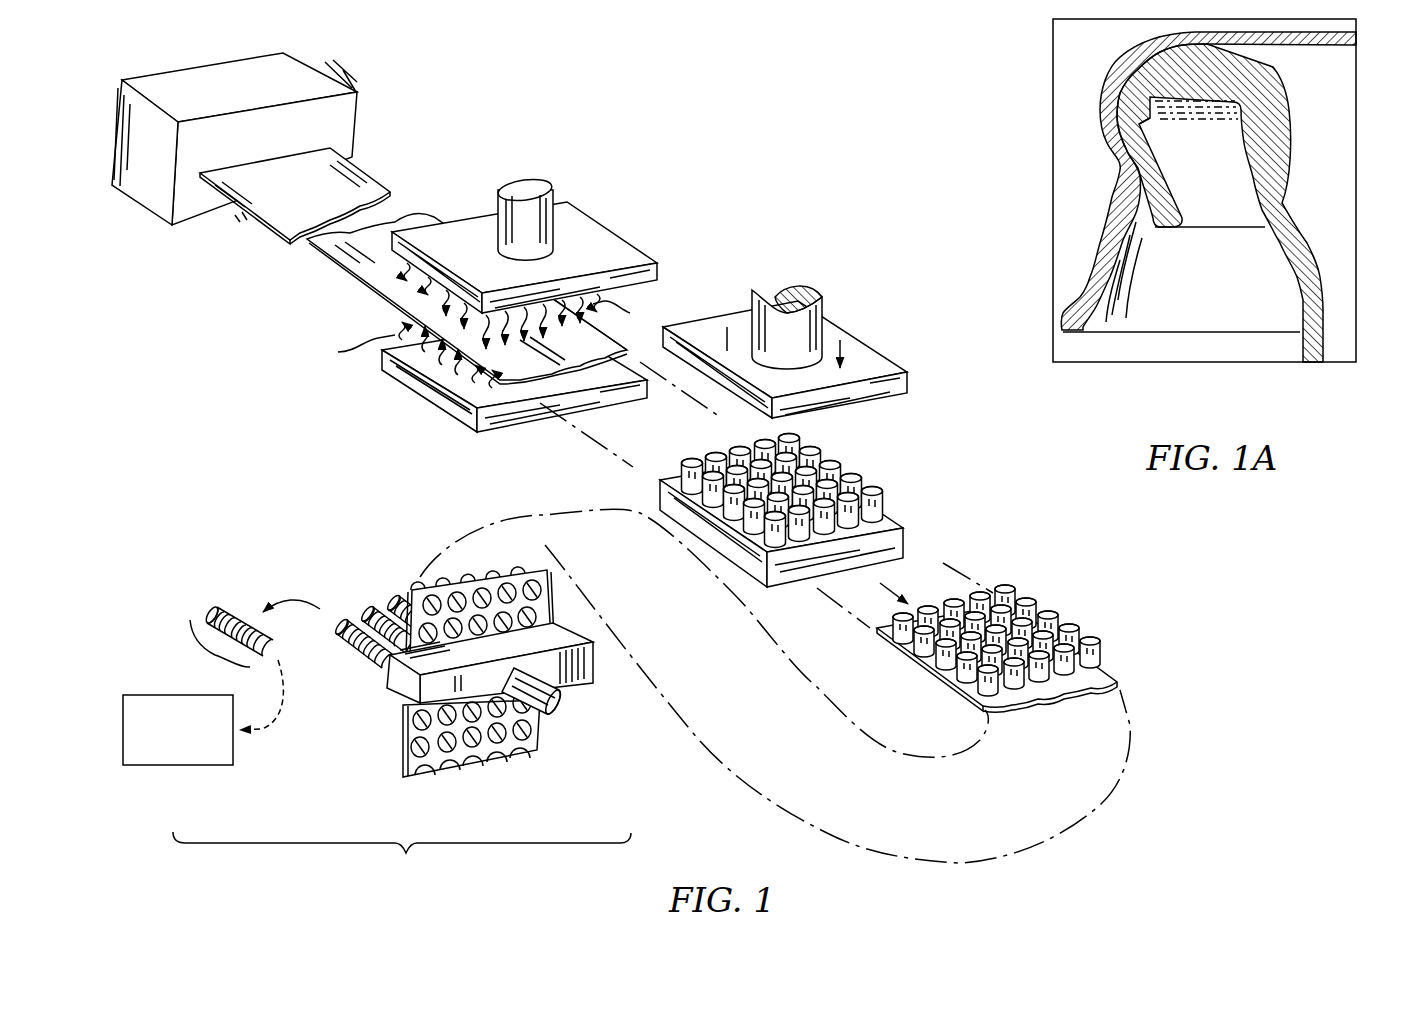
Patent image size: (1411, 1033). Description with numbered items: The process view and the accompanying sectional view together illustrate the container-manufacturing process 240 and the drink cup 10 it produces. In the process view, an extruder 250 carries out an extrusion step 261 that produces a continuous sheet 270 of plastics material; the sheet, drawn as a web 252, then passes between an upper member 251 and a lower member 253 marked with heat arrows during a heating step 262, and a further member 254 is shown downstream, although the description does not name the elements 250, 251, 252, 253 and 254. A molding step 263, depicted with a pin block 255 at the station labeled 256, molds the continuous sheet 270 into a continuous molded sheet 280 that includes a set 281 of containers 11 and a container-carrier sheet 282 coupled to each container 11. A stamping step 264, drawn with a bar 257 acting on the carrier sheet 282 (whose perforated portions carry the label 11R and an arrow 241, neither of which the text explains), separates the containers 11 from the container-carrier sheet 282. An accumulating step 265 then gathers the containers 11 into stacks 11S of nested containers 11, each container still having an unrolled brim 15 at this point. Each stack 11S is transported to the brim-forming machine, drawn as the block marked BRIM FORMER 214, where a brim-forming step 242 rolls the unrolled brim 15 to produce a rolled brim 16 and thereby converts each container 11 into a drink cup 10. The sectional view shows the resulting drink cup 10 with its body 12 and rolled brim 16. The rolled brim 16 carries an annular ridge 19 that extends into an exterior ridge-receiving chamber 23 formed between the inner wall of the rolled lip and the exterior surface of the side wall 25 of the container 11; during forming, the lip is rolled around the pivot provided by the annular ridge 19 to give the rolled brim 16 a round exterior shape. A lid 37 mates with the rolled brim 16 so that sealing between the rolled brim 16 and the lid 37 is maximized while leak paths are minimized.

In FIG. 1, the extruder 250 is at (236, 85).
In FIG. 1, the extrusion step 261 is at (383, 133).
In FIG. 1, the container-manufacturing process 240 is at (643, 155).
In FIG. 1, the upper press platen 251 is at (601, 240).
In FIG. 1, the heating step 262 is at (680, 253).
In FIG. 1, the extruded web 252 is at (397, 280).
In FIG. 1, the press platen with punch 254 is at (862, 357).
In FIG. 1, the continuous sheet 270 is at (283, 218).
In FIG. 1, the lower press platen 253 is at (508, 430).
In FIG. 1, the molding step 263 is at (917, 465).
In FIG. 1, the pin block 255 is at (887, 497).
In FIG. 1, the forming step 256 is at (913, 545).
In FIG. 1, the unrolled brim 15 is at (230, 612).
In FIG. 1, the accumulating step 265 is at (362, 600).
In FIG. 1, the container 11 is at (340, 630).
In FIG. 1, the container-carrier sheet 282 is at (497, 588).
In FIG. 1, the pin rim 11R is at (545, 588).
In FIG. 1, the cutting bar 257 is at (572, 637).
In FIG. 1, the stack of nested containers 11S is at (360, 672).
In FIG. 1, the stamping step 264 is at (580, 695).
In FIG. 1, the separating step 241 is at (637, 762).
In FIG. 1, the brim former 214 is at (123, 730).
In FIG. 1, the brim-forming step 242 is at (177, 772).
In FIG. 1, the continuous molded sheet 280 is at (890, 655).
In FIG. 1, the set of containers 281 is at (955, 608).
In FIG. 1A, the annular ridge 19 is at (1153, 123).
In FIG. 1A, the lid 37 is at (1097, 246).
In FIG. 1A, the exterior ridge-receiving chamber 23 is at (1203, 198).
In FIG. 1A, the side wall 25 is at (1307, 287).
In FIG. 1A, the rolled brim 16 is at (1167, 235).
In FIG. 1A, the drink cup 10 is at (1300, 310).
In FIG. 1A, the body 12 is at (1314, 345).